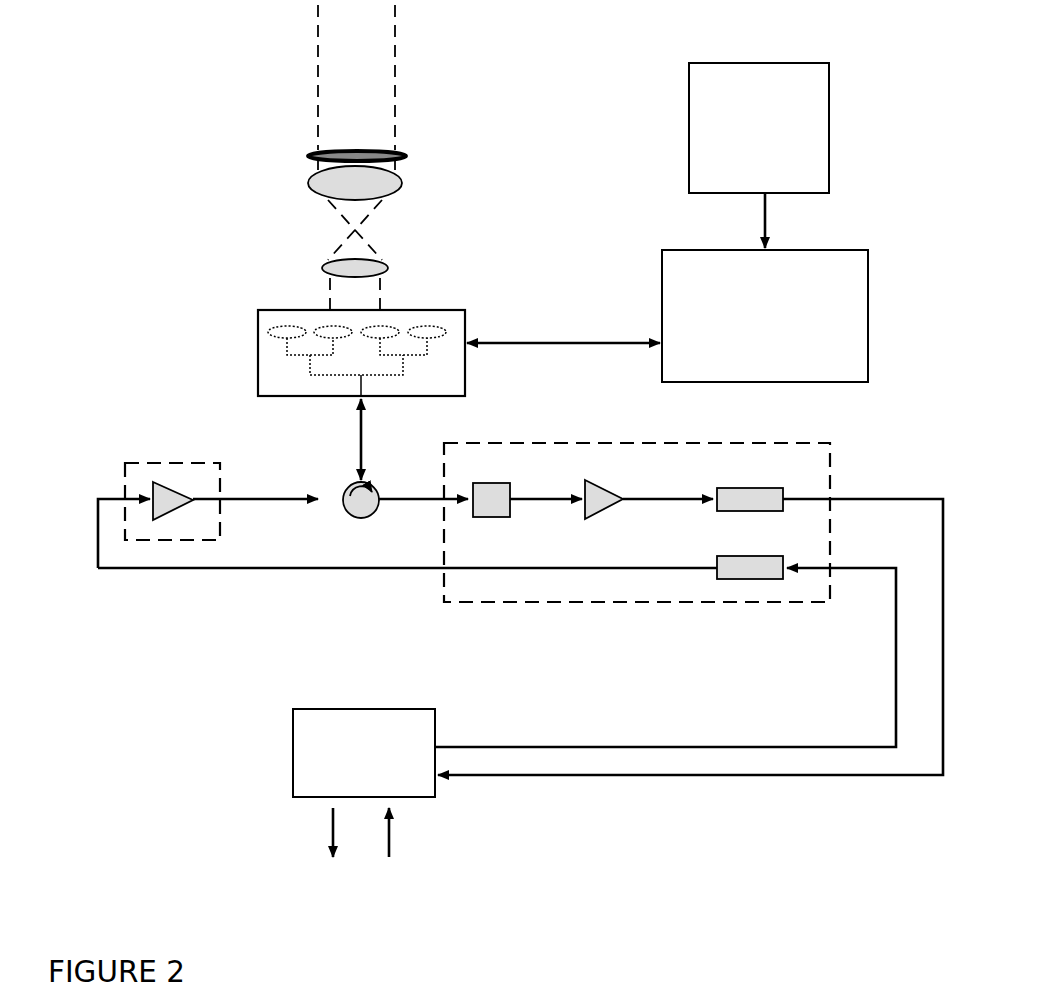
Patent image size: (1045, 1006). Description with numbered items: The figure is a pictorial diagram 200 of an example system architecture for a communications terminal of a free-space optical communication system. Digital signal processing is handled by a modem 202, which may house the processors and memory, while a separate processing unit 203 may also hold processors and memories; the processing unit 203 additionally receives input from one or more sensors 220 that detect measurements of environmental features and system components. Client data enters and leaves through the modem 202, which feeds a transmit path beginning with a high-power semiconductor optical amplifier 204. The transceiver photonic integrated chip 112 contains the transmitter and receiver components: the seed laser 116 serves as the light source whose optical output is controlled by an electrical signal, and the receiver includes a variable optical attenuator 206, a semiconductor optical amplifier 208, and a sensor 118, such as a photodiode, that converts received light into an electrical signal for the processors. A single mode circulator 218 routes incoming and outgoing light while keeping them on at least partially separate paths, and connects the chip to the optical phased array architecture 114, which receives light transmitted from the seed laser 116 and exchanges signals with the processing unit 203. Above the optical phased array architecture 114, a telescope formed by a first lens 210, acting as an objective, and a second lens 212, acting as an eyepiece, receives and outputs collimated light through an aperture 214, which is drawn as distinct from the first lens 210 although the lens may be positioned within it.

The pictorial diagram 200 is at (137, 938).
The modem 202 is at (385, 747).
The processing unit 203 is at (742, 312).
The high-power semiconductor optical amplifier 204 is at (125, 486).
The variable optical attenuator 206 is at (473, 484).
The semiconductor optical amplifier 208 is at (604, 491).
The first lens 210 is at (402, 184).
The second lens 212 is at (389, 268).
The aperture 214 is at (302, 156).
The single mode circulator 218 is at (380, 490).
The sensors 220 is at (738, 122).
The transceiver photonic integrated chip 112 is at (650, 443).
The optical phased array architecture 114 is at (258, 350).
The seed laser 116 is at (737, 556).
The sensor 118 is at (737, 488).